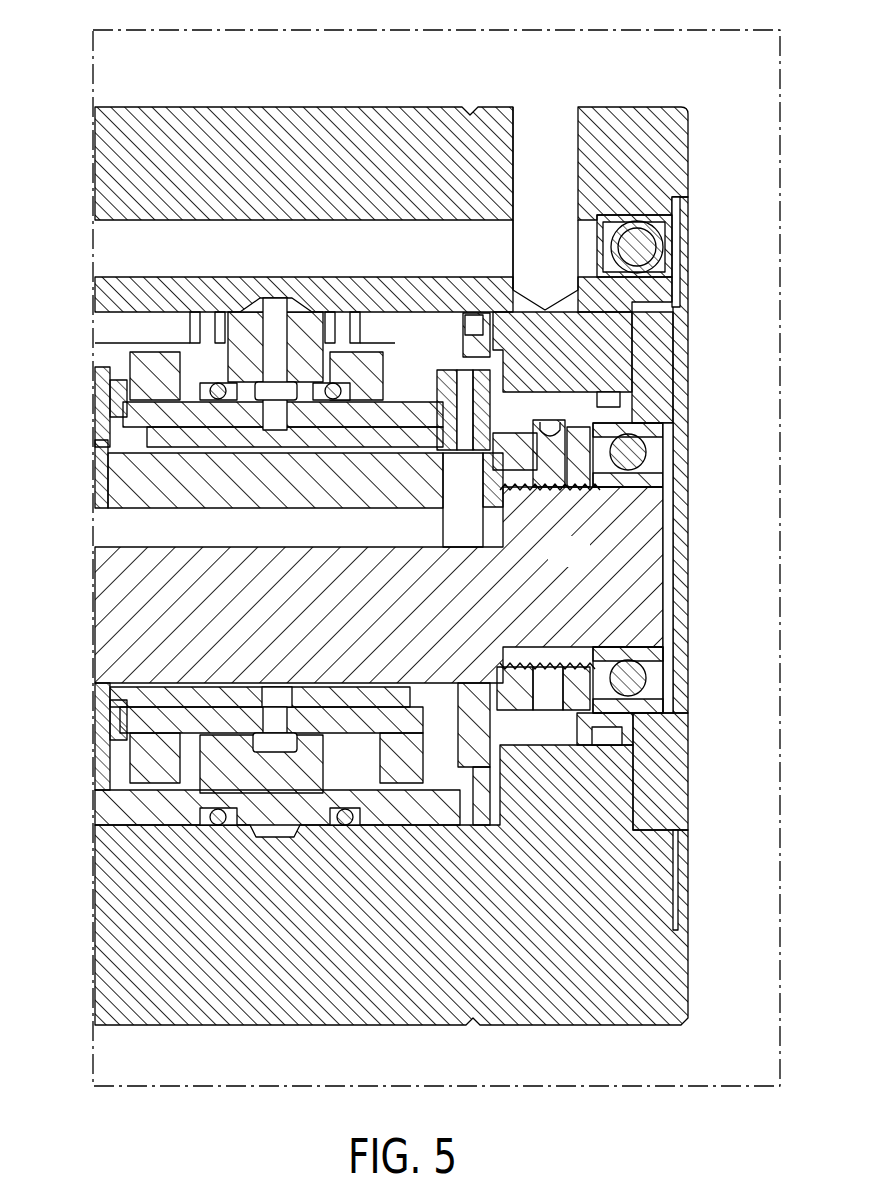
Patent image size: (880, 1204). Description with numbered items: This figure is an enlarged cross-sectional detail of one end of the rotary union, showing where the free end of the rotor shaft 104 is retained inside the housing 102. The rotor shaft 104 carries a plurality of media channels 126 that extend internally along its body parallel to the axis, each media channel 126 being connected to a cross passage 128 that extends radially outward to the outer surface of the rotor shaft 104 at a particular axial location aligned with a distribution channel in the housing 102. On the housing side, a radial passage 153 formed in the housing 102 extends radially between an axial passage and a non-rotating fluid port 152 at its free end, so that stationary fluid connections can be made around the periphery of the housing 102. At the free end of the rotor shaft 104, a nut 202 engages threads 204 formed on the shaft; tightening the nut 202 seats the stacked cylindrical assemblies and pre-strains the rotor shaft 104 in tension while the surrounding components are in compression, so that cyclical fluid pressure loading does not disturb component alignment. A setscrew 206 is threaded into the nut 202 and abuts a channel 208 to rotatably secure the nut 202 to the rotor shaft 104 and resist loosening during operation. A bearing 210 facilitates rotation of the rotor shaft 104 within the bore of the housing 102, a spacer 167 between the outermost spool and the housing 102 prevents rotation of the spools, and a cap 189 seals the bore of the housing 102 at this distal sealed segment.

The housing 102 is at (672, 140).
The rotor shaft 104 is at (645, 615).
The media channel 126 is at (112, 530).
The cross passage 128 is at (465, 480).
The non-rotating fluid port 152 is at (547, 143).
The radial passage 153 is at (533, 170).
The spacer 167 is at (480, 815).
The cap 189 is at (680, 790).
The nut 202 is at (578, 710).
The threads 204 is at (552, 492).
The setscrew 206 is at (553, 430).
The channel 208 is at (673, 428).
The bearing 210 is at (680, 682).